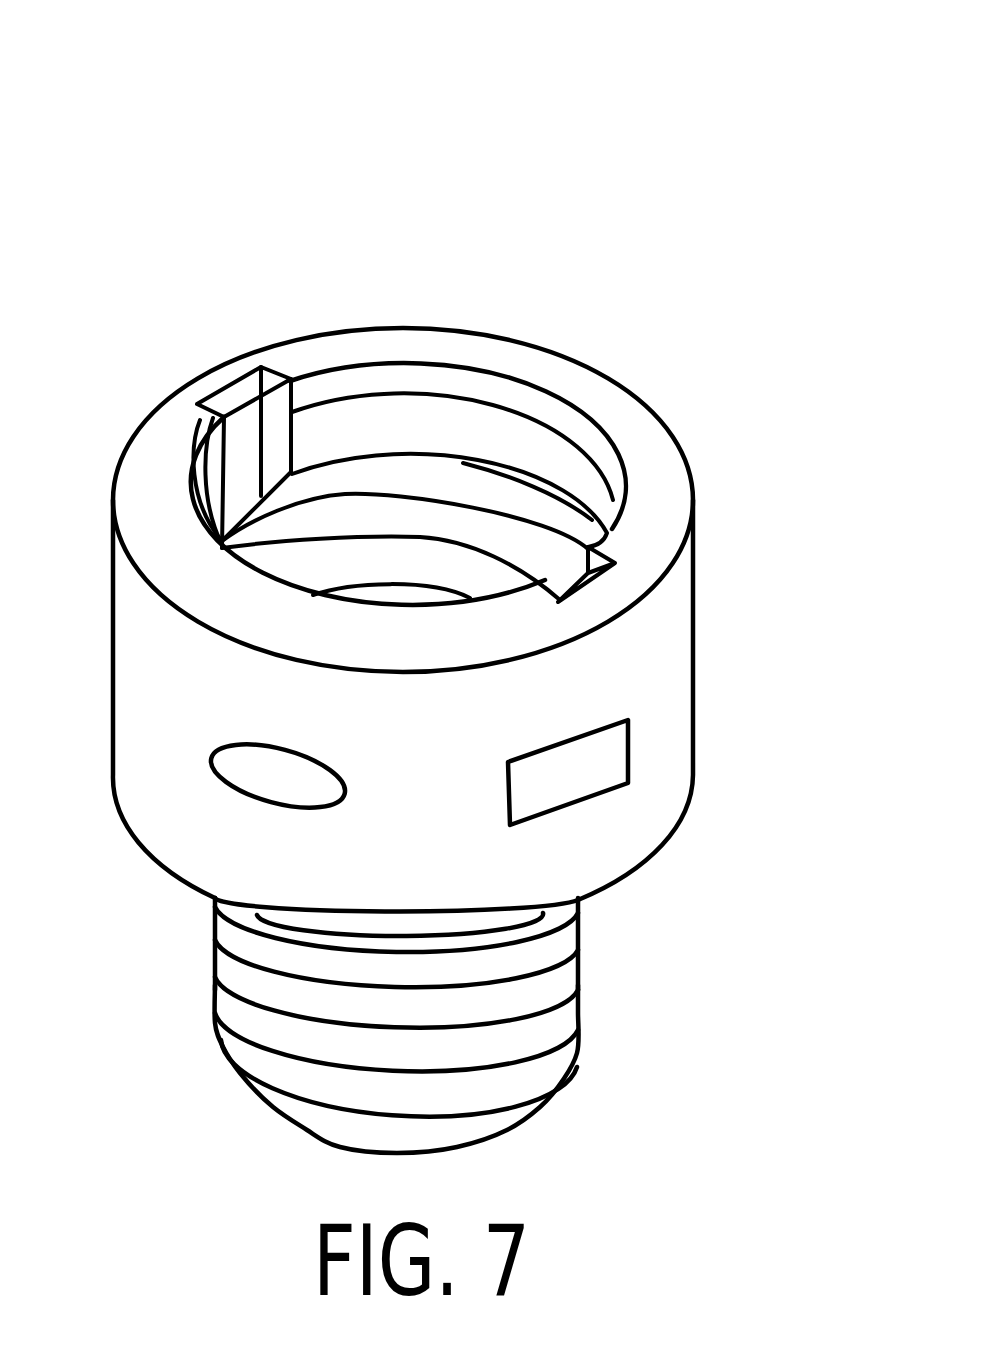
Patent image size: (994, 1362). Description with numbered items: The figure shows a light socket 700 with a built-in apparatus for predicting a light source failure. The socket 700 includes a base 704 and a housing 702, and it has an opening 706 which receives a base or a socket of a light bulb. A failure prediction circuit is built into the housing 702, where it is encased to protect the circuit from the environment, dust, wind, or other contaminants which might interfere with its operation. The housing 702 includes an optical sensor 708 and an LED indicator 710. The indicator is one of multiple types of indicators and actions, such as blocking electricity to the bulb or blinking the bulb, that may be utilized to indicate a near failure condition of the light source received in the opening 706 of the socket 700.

The light socket 700 is at (498, 90).
The housing 702 is at (692, 608).
The base 704 is at (583, 990).
The opening 706 is at (389, 470).
The optical sensor 708 is at (630, 750).
The LED indicator 710 is at (220, 781).